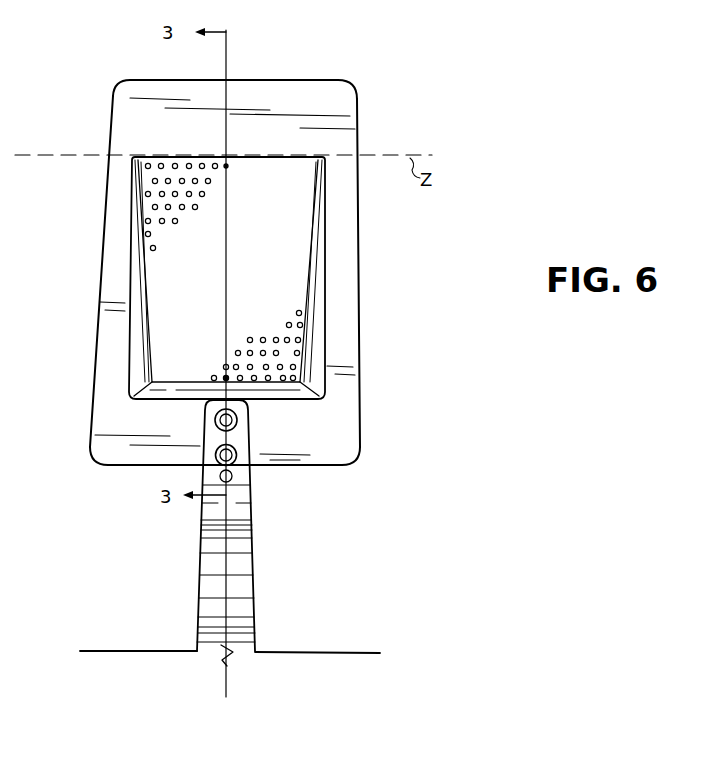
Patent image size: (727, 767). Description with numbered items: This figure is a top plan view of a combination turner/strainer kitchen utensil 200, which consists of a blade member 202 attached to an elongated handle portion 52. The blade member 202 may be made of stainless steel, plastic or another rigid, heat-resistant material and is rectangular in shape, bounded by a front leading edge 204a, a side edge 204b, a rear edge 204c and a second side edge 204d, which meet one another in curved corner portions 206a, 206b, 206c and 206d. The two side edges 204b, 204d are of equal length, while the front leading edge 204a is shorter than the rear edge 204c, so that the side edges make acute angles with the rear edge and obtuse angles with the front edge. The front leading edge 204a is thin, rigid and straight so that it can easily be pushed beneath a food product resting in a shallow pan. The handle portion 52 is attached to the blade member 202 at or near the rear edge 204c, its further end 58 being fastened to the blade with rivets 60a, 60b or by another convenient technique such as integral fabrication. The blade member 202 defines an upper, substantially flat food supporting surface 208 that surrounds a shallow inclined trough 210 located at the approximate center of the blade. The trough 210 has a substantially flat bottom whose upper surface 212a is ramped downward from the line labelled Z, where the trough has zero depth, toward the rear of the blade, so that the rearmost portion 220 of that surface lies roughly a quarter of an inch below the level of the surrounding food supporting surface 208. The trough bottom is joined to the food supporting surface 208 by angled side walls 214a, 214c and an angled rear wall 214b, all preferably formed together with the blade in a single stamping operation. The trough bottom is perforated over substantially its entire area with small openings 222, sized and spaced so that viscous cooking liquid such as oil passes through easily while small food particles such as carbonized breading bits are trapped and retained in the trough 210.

The combination turner/strainer kitchen utensil 200 is at (393, 270).
The blade member 202 is at (331, 72).
The front leading edge 204a is at (278, 80).
The side edge 204b is at (360, 326).
The rear edge 204c is at (325, 466).
The side edge 204d is at (99, 330).
The curved corner portion 206a is at (357, 459).
The curved corner portion 206b is at (93, 458).
The curved corner portion 206c is at (353, 93).
The curved corner portion 206d is at (112, 92).
The food supporting surface 208 is at (349, 446).
The trough 210 is at (284, 173).
The bottom portion upper surface 212a is at (279, 254).
The angled side wall 214a is at (134, 272).
The angled rear wall 214b is at (130, 398).
The angled side wall 214c is at (312, 350).
The rearmost portion 220 is at (200, 380).
The openings 222 is at (147, 191).
The rivet 60a is at (248, 479).
The rivet 60b is at (238, 426).
The further end 58 is at (254, 598).
The handle portion 52 is at (200, 622).